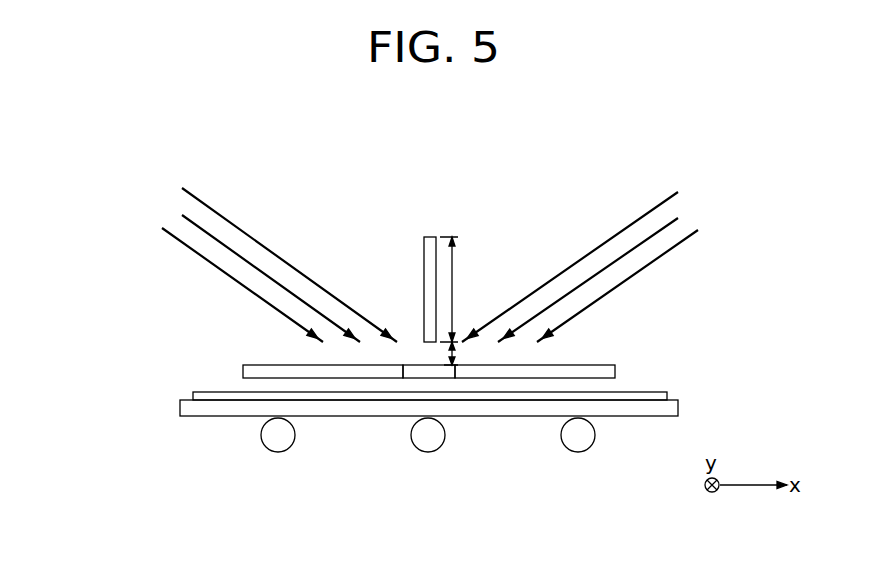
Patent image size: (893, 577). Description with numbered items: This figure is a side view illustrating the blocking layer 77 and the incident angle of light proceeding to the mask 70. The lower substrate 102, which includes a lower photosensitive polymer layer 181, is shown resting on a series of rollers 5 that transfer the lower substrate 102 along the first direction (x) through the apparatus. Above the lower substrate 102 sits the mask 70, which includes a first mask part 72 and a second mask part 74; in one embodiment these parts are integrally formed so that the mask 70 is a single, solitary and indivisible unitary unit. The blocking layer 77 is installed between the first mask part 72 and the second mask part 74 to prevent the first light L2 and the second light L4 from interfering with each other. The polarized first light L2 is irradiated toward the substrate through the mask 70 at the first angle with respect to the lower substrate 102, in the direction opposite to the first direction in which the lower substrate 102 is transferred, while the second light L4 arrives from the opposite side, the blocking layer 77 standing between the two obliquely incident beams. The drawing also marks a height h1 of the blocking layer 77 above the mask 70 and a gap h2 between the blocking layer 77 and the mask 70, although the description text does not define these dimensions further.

The rollers 5 is at (277, 440).
The mask 70 is at (429, 460).
The first mask part 72 is at (478, 373).
The second mask part 74 is at (372, 372).
The blocking layer 77 is at (427, 237).
The lower substrate 102 is at (630, 417).
The lower photosensitive polymer layer 181 is at (537, 398).
The first light L2 is at (633, 277).
The second light L4 is at (225, 277).
The first height h1 is at (461, 289).
The second height h2 is at (463, 354).